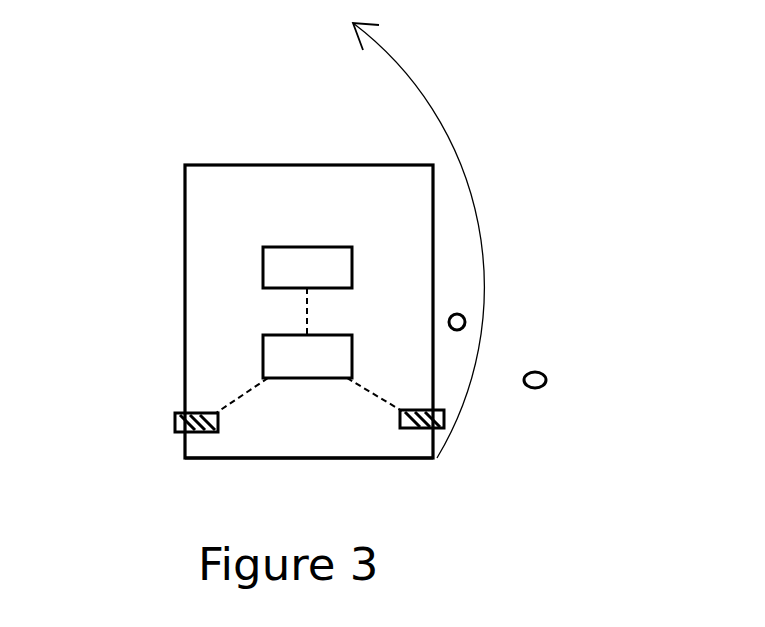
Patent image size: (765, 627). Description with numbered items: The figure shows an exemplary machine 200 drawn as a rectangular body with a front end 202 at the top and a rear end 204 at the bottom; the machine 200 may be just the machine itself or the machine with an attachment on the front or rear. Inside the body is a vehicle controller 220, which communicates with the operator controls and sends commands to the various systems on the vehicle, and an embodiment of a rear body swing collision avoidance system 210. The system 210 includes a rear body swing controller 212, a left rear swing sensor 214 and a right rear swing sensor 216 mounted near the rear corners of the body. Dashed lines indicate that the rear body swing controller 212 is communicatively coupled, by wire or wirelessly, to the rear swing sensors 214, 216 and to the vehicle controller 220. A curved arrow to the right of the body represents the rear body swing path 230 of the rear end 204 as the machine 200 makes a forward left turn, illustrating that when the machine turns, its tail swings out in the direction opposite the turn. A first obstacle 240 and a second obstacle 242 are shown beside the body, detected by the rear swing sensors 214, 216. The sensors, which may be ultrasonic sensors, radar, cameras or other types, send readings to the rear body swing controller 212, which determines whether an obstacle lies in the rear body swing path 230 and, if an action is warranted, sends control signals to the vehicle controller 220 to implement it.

The machine 200 is at (133, 223).
The front end 202 is at (268, 164).
The rear end 204 is at (245, 458).
The rear body swing collision avoidance system 210 is at (240, 323).
The rear body swing controller 212 is at (307, 356).
The left rear swing sensor 214 is at (180, 416).
The right rear swing sensor 216 is at (443, 426).
The vehicle controller 220 is at (307, 267).
The rear body swing path 230 is at (480, 233).
The first obstacle 240 is at (466, 315).
The second obstacle 242 is at (545, 371).